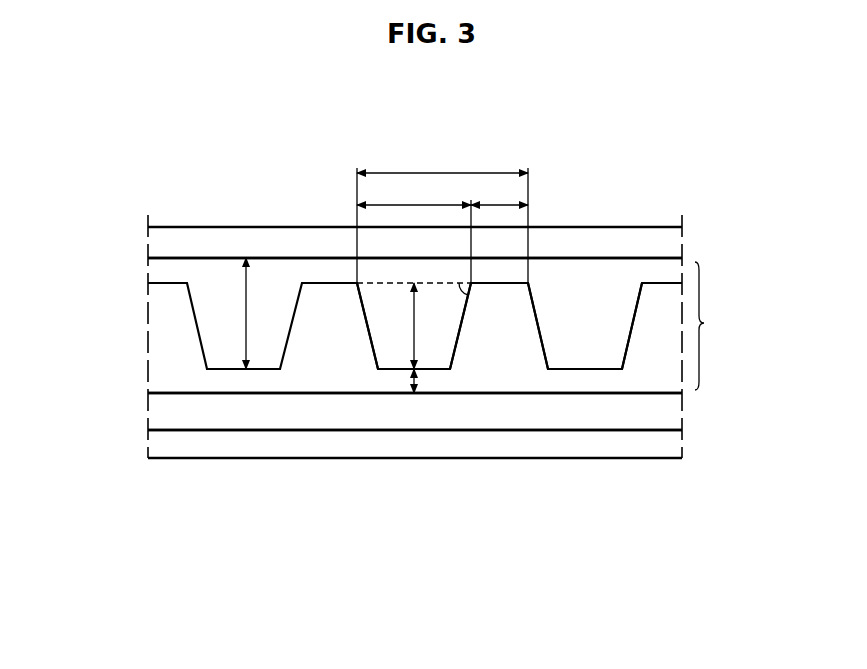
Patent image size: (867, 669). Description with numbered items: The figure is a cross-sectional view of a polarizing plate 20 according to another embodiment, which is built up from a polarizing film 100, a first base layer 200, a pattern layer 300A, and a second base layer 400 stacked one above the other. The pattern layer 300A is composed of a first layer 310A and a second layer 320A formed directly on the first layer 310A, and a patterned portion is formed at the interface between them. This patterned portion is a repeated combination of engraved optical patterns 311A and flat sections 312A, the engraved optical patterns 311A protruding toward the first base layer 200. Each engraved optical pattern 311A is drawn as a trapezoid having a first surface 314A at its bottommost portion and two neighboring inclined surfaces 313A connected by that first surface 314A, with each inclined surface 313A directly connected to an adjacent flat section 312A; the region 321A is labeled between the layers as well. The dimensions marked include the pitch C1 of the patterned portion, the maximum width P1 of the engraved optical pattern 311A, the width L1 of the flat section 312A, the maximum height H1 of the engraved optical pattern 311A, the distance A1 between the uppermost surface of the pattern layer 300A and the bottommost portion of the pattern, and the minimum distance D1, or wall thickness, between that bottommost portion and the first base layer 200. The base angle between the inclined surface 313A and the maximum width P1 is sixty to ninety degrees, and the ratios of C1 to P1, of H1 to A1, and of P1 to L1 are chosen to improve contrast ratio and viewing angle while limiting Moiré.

The polarizing plate 20 is at (664, 169).
The polarizing film 100 is at (673, 445).
The first base layer 200 is at (673, 408).
The pattern layer 300A is at (451, 325).
The first layer 310A is at (157, 340).
The second layer 320A is at (157, 270).
The recess 321A is at (590, 305).
The engraved optical pattern 311A is at (372, 338).
The flat section 312A is at (508, 283).
The inclined surface 313A is at (457, 338).
The first surface 314A is at (388, 370).
The second base layer 400 is at (673, 242).
The pitch C1 is at (442, 212).
The maximum width P1 is at (414, 231).
The width of flat section L1 is at (499, 192).
The distance A1 is at (259, 313).
The maximum height H1 is at (414, 326).
The minimum distance D1 is at (414, 382).